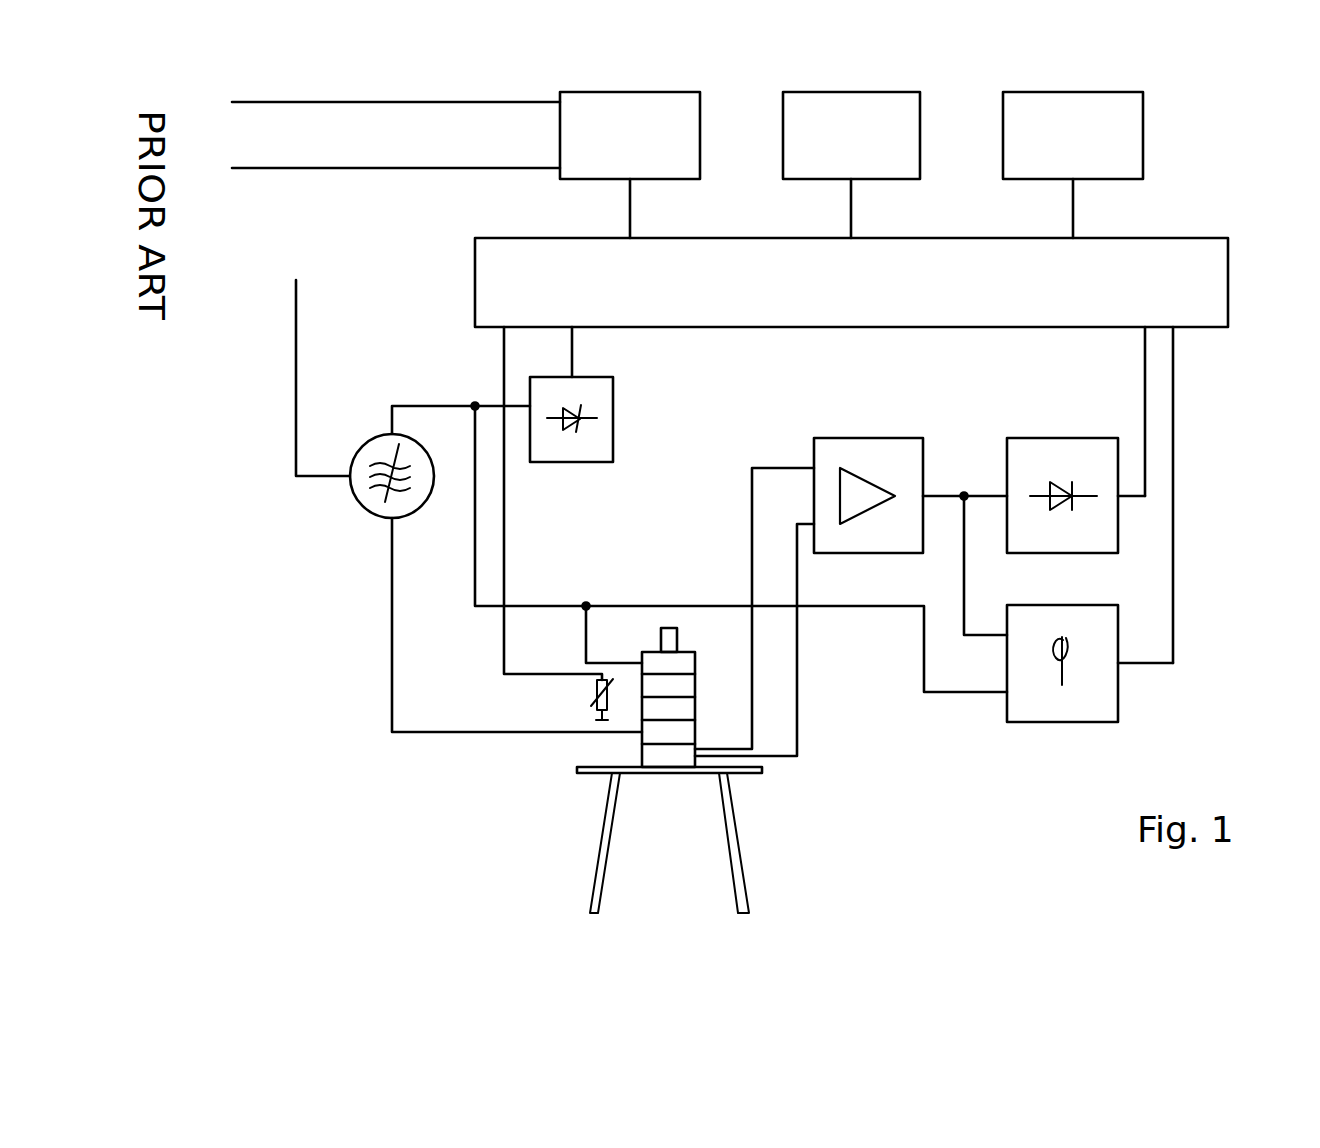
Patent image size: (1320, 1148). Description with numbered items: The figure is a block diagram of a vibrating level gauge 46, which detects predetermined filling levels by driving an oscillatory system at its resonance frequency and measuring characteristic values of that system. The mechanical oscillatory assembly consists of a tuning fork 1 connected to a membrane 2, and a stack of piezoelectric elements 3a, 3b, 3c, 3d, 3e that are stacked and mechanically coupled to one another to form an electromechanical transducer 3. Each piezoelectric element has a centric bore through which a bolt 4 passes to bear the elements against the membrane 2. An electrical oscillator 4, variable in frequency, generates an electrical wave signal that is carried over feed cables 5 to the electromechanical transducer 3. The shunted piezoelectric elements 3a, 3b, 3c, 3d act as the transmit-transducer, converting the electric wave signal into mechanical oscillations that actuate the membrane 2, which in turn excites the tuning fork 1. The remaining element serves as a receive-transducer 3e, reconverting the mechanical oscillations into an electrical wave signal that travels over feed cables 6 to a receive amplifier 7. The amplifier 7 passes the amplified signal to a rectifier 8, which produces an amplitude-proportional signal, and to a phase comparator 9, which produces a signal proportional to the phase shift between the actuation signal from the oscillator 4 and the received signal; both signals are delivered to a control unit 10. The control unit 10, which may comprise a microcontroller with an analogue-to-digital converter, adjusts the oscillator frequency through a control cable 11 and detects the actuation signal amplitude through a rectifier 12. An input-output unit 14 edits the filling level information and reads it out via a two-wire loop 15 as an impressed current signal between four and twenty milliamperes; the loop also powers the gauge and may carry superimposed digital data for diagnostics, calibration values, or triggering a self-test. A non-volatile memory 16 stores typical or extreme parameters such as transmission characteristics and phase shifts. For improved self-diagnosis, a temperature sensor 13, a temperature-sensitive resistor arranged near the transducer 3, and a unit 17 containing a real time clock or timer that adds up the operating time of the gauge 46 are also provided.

The tuning fork 1 is at (609, 832).
The membrane 2 is at (580, 775).
The electromechanical transducer 3 is at (691, 710).
The piezoelectric element 3a is at (668, 664).
The piezoelectric element 3b is at (668, 687).
The piezoelectric element 3c is at (667, 710).
The piezoelectric element 3d is at (668, 734).
The receive-transducer 3e is at (668, 757).
The electrical oscillator 4 is at (363, 508).
The feed cables 5 is at (475, 568).
The feed cables 6 is at (752, 570).
The receive amplifier 7 is at (860, 554).
The rectifier 8 is at (1055, 554).
The phase comparator 9 is at (1055, 722).
The control unit 10 is at (851, 459).
The control cable 11 is at (297, 362).
The rectifier 12 is at (613, 413).
The temperature sensor 13 is at (593, 713).
The input-output unit 14 is at (663, 181).
The two-wire loop 15 is at (398, 103).
The non-volatile memory 16 is at (883, 181).
The operating time detecting unit 17 is at (1105, 181).
The vibrating level gauge 46 is at (355, 708).